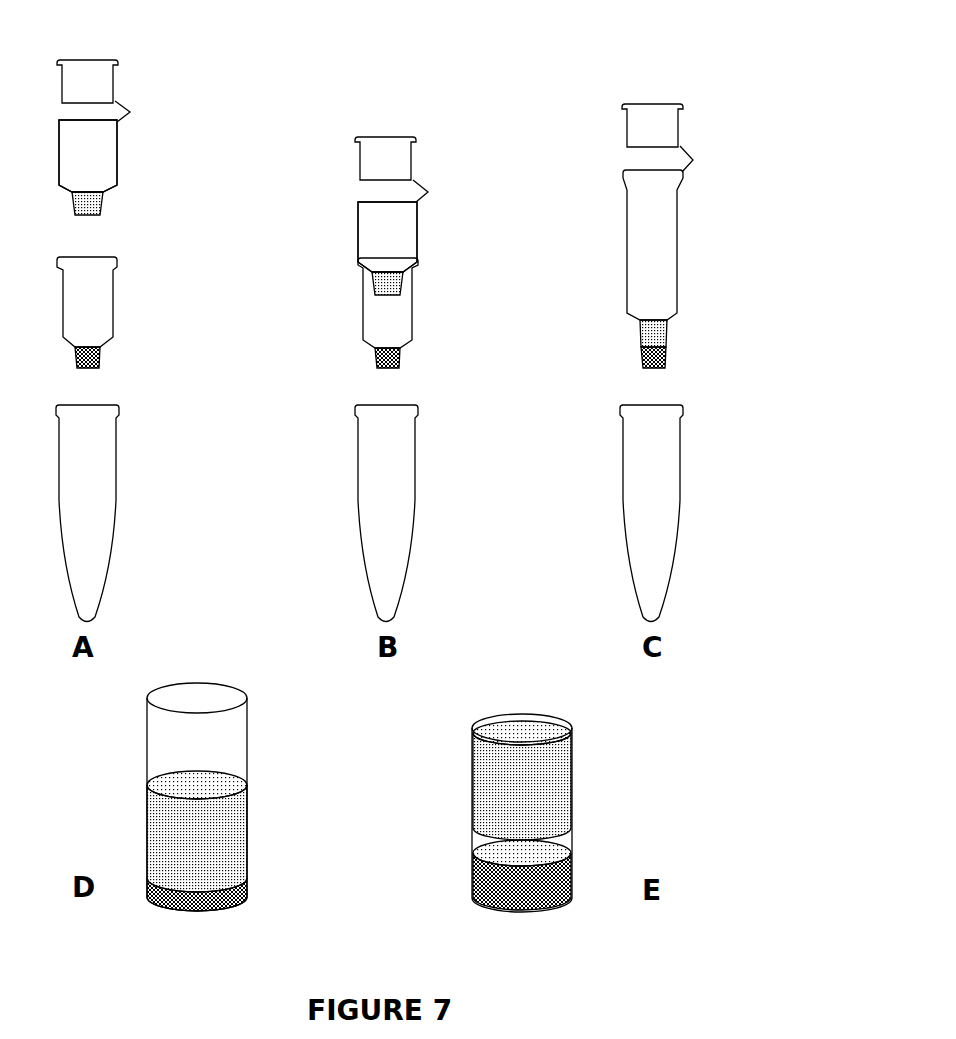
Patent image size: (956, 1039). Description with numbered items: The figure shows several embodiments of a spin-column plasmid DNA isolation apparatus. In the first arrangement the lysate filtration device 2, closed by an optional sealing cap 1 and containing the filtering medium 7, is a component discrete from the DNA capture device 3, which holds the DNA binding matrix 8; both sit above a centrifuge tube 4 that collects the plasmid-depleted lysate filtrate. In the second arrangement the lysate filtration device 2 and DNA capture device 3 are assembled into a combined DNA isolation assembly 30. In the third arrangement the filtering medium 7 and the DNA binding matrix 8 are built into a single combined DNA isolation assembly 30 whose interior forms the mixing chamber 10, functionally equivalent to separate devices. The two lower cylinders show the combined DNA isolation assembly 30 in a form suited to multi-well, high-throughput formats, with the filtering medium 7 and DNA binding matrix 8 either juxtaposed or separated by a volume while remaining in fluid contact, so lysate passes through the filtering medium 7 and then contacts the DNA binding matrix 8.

The sealing cap 1 is at (360, 160).
The lysate filtration device 2 is at (358, 235).
The DNA capture device 3 is at (360, 317).
The centrifuge tube 4 is at (357, 502).
The filtering medium 7 is at (380, 288).
The DNA binding matrix 8 is at (375, 362).
The mixing chamber 10 is at (390, 222).
The combined DNA isolation assembly 30 is at (422, 239).